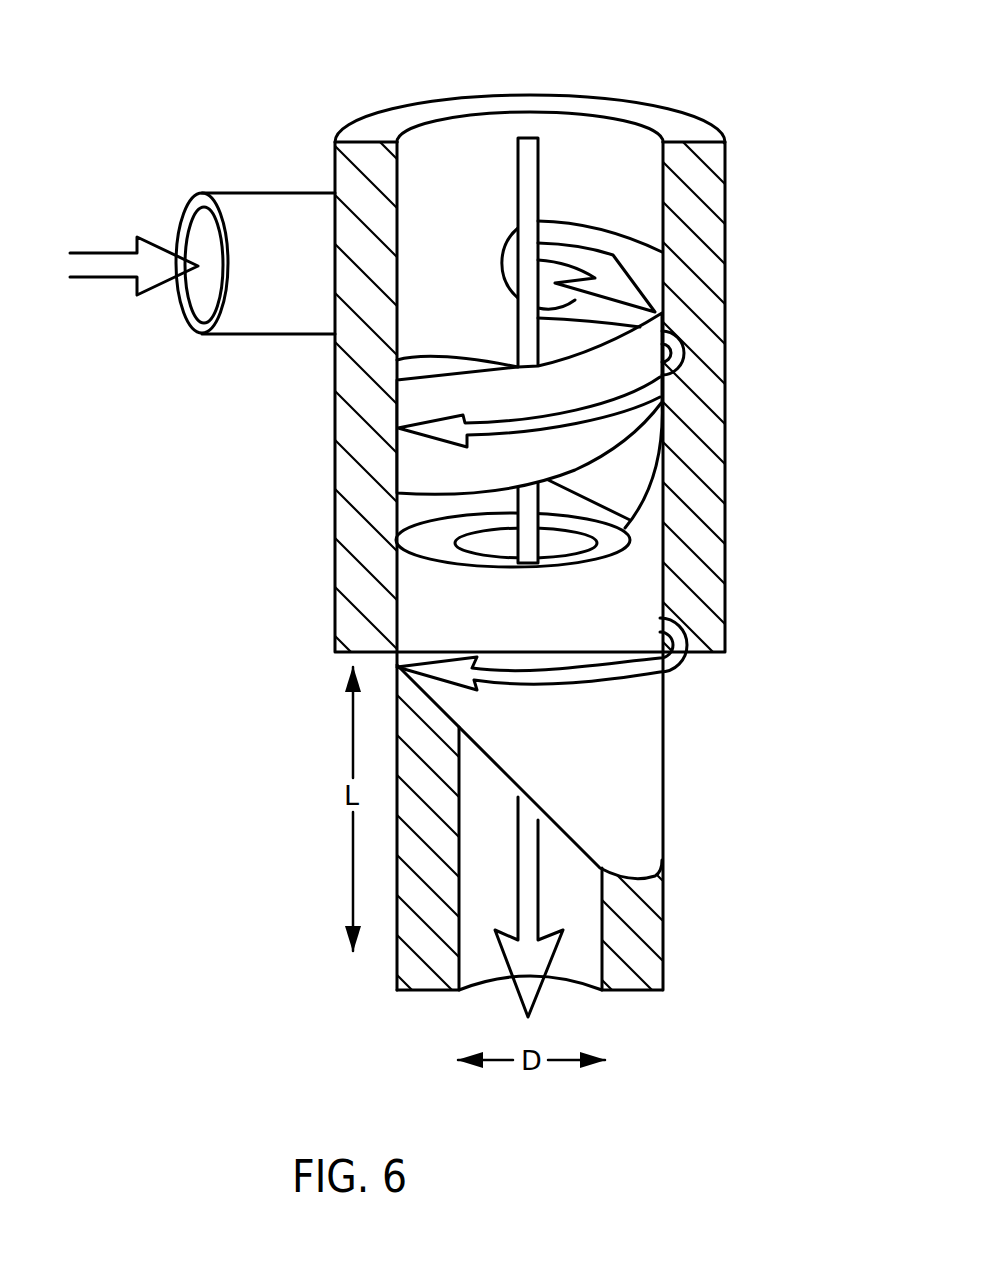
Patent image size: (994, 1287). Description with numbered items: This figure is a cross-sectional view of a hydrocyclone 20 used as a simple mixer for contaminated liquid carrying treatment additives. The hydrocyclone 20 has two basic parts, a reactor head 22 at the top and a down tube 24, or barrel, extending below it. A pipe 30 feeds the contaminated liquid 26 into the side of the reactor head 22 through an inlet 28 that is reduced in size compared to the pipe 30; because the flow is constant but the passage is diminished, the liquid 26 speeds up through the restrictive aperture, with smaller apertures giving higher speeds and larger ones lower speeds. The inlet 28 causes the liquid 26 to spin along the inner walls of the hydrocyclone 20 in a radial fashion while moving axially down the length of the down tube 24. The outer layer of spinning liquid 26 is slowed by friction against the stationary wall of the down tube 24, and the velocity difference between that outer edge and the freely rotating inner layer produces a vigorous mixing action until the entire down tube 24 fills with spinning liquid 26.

The hydrocyclone 20 is at (421, 522).
The reactor head 22 is at (723, 283).
The down tube 24 is at (335, 597).
The contaminated liquid 26 is at (102, 252).
The inlet 28 is at (513, 233).
The pipe 30 is at (278, 322).